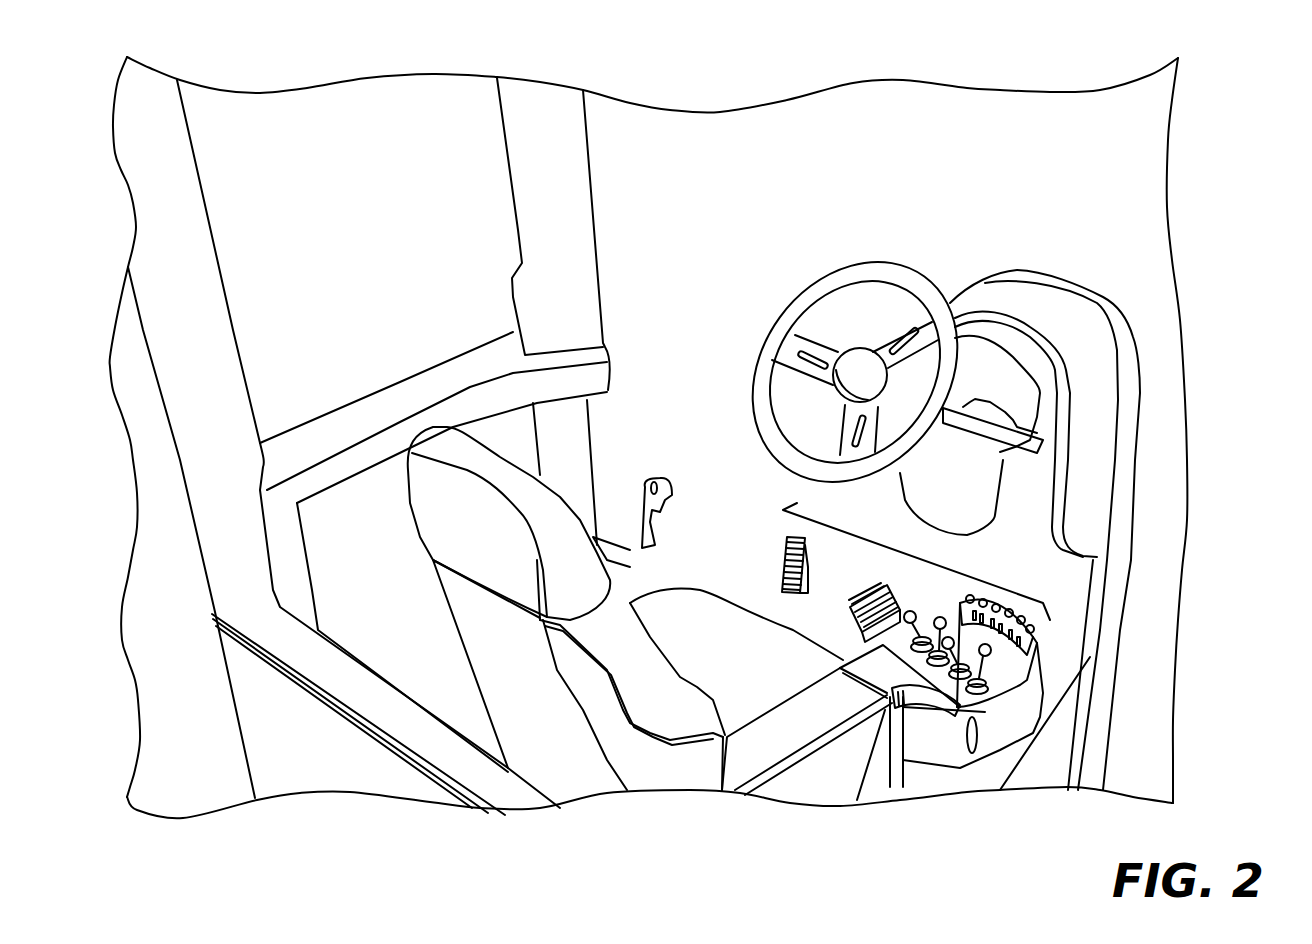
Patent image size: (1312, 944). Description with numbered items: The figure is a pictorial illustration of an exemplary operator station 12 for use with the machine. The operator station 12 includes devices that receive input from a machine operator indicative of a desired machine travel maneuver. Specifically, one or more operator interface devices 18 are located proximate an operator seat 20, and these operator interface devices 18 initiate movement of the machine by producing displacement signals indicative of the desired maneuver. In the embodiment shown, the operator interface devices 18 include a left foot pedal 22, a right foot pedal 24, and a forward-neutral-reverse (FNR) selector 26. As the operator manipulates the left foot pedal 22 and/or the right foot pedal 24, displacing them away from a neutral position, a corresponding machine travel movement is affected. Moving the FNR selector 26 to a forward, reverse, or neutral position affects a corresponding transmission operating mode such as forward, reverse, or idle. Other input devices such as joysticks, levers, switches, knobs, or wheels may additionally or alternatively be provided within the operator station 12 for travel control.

The operator station 12 is at (1120, 172).
The operator interface devices 18 is at (864, 528).
The operator seat 20 is at (550, 507).
The left foot pedal 22 is at (781, 555).
The right foot pedal 24 is at (860, 603).
The forward-neutral-reverse (FNR) selector 26 is at (913, 613).